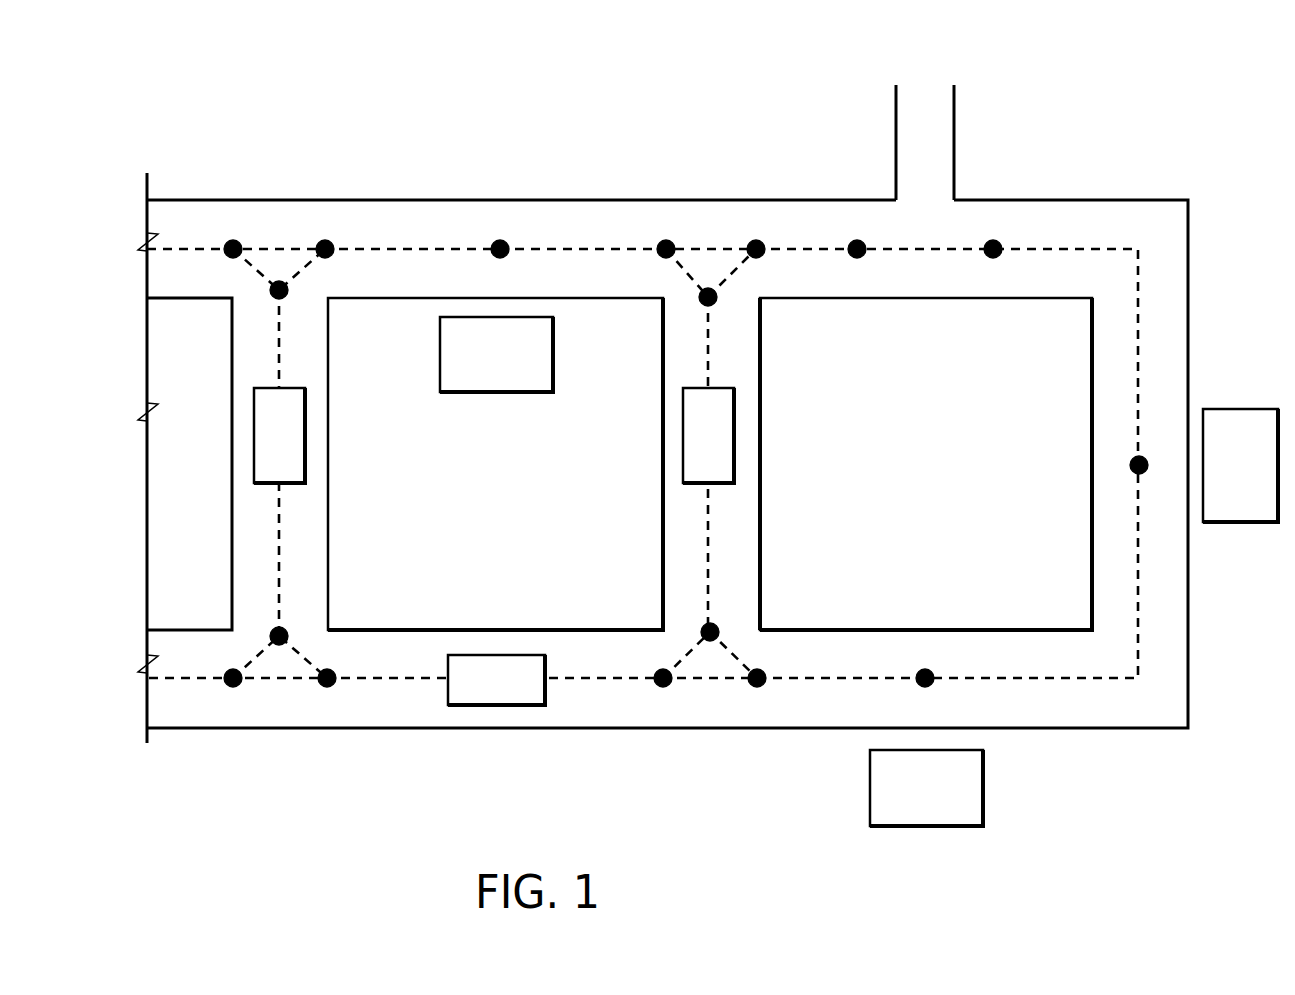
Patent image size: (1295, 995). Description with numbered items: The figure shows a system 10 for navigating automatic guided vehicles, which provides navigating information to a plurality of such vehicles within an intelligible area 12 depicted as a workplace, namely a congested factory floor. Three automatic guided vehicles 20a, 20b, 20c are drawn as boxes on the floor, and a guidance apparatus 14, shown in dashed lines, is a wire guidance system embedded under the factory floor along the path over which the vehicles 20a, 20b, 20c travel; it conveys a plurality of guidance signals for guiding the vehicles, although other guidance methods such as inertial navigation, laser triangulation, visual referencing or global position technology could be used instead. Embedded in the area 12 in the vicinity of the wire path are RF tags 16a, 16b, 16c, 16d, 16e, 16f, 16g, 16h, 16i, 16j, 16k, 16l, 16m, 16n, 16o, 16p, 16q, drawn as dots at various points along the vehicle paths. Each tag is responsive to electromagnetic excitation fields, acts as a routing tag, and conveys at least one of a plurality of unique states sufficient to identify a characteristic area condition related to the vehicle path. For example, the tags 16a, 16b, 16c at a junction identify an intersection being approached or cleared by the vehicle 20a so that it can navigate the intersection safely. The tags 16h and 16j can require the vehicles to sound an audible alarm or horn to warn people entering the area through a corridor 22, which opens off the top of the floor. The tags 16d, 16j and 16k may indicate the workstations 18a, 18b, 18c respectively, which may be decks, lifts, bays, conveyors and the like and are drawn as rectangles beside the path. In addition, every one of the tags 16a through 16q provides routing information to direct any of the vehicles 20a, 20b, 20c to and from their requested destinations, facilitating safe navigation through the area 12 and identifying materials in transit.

The system 10 is at (620, 100).
The intelligible area 12 is at (600, 200).
The guidance apparatus 14 is at (410, 246).
The RF tag 16a is at (233, 240).
The RF tag 16b is at (288, 293).
The RF tag 16c is at (325, 240).
The RF tag 16d is at (502, 258).
The RF tag 16e is at (664, 240).
The RF tag 16f is at (717, 300).
The RF tag 16g is at (757, 240).
The RF tag 16h is at (859, 258).
The RF tag 16i is at (995, 258).
The RF tag 16j is at (1148, 468).
The RF tag 16k is at (933, 673).
The RF tag 16l is at (760, 687).
The RF tag 16m is at (719, 635).
The RF tag 16n is at (666, 687).
The RF tag 16o is at (330, 687).
The RF tag 16p is at (288, 639).
The RF tag 16q is at (236, 687).
The workstation 18a is at (480, 392).
The workstation 18b is at (930, 826).
The workstation 18c is at (1225, 522).
The automatic guided vehicle 20a is at (305, 435).
The automatic guided vehicle 20b is at (495, 705).
The automatic guided vehicle 20c is at (734, 435).
The corridor 22 is at (925, 142).